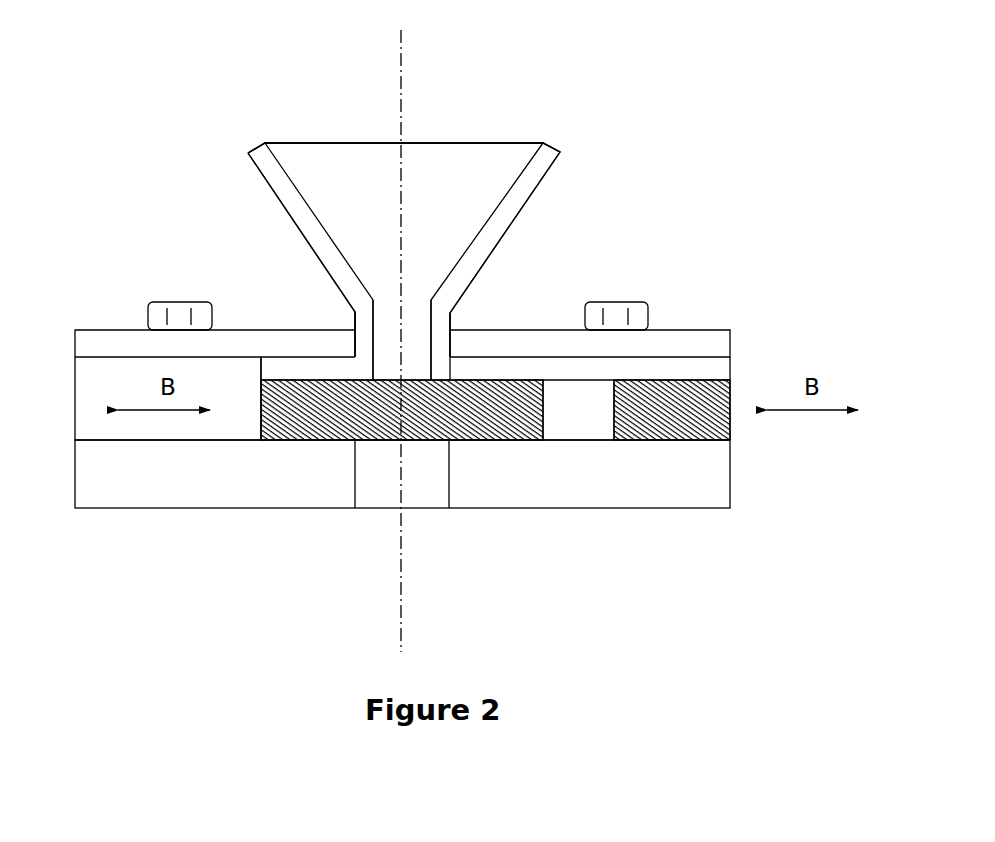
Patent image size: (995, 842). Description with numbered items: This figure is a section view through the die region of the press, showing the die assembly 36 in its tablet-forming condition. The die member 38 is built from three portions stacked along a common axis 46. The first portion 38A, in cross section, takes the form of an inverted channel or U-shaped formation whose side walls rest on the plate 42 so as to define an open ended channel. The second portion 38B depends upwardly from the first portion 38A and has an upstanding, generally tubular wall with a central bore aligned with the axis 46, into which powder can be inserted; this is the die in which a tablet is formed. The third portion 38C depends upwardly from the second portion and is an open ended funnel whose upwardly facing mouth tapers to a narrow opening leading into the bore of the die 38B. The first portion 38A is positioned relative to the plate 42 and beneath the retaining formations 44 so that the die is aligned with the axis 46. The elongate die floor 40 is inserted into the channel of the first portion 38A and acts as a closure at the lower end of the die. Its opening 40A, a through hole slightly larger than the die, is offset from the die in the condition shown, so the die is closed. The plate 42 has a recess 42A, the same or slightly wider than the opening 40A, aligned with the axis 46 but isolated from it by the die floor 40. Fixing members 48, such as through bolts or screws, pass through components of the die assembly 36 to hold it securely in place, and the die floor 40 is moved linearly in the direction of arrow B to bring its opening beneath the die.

The die assembly 36 is at (670, 143).
The die member 38 is at (508, 213).
The first portion 38A is at (683, 370).
The second portion 38B is at (353, 318).
The third portion 38C is at (250, 152).
The die floor 40 is at (710, 420).
The opening 40A is at (573, 418).
The plate 42 is at (613, 483).
The recess 42A is at (373, 497).
The retaining formations 44 is at (100, 345).
The axis 46 is at (401, 88).
The fixing members 48 is at (165, 302).